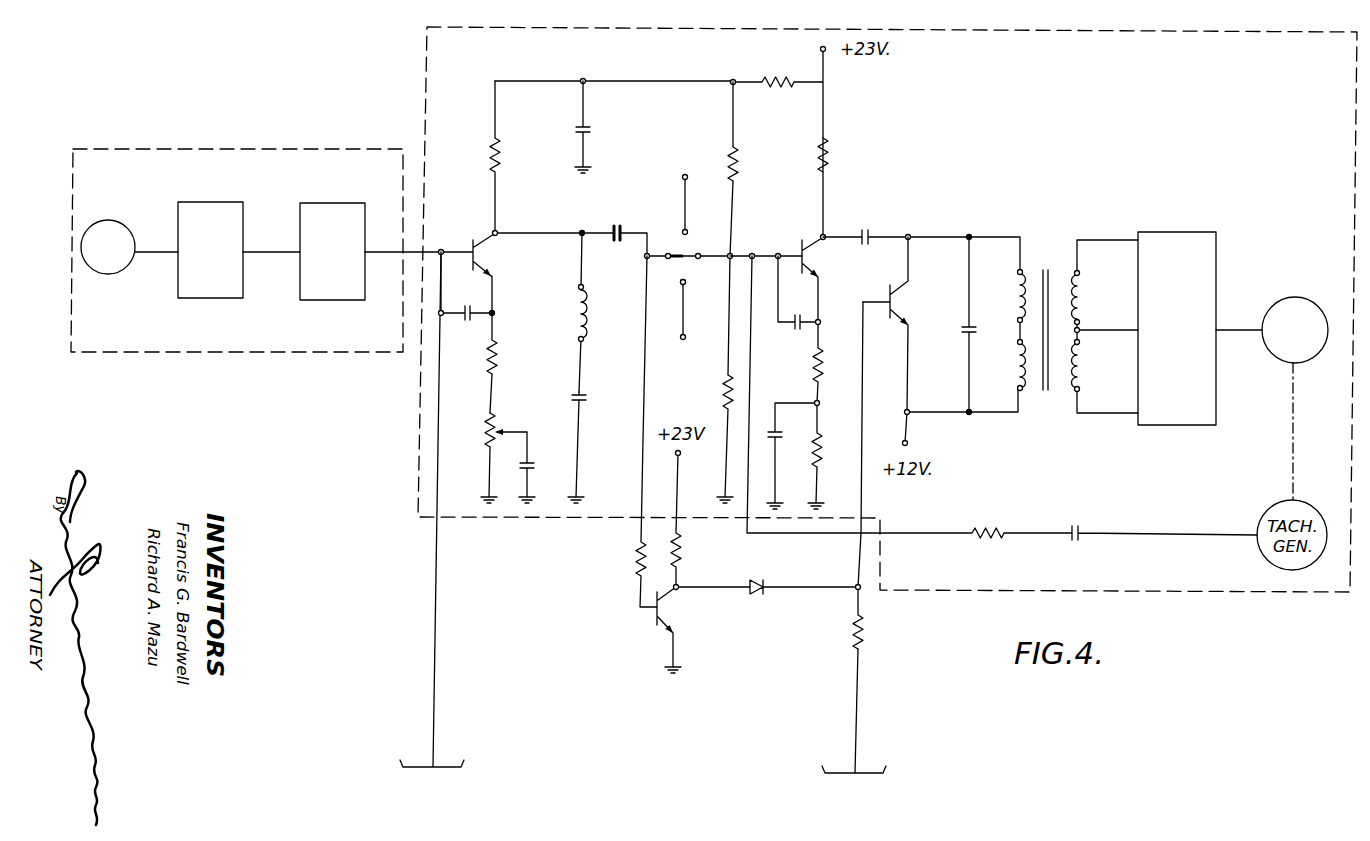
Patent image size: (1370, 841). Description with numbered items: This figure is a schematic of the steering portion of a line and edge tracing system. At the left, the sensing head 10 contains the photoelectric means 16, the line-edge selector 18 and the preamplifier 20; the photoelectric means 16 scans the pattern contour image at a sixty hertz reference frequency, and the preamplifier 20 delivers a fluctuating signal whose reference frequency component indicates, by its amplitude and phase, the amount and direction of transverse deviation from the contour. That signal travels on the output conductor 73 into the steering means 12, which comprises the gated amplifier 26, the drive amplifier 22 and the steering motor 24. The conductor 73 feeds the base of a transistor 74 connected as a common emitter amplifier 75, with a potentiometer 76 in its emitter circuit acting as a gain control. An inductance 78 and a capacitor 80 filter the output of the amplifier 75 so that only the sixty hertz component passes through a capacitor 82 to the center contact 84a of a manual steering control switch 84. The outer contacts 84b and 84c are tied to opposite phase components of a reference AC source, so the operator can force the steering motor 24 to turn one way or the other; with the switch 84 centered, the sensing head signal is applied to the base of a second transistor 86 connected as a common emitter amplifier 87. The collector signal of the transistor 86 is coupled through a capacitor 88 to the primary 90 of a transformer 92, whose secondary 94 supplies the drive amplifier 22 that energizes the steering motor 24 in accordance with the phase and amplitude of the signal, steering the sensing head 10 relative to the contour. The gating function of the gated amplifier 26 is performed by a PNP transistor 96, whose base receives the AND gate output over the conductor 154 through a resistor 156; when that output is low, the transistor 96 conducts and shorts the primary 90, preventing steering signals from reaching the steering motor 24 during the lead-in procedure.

The sensing head 10 is at (236, 150).
The steering means 12 is at (781, 30).
The photoelectric means 16 is at (117, 222).
The line-edge selector 18 is at (195, 202).
The preamplifier 20 is at (320, 203).
The drive amplifier 22 is at (1168, 232).
The steering motor 24 is at (1320, 298).
The gated amplifier 26 is at (850, 195).
The output conductor 73 is at (380, 252).
The transistor 74 is at (470, 245).
The amplifier 75 is at (500, 223).
The potentiometer 76 is at (492, 420).
The inductance 78 is at (583, 299).
The capacitor 80 is at (582, 400).
The capacitor 82 is at (622, 228).
The manual steering control switch 84 is at (689, 259).
The center contact 84a is at (668, 249).
The outer contact 84b is at (688, 232).
The outer contact 84c is at (683, 283).
The second transistor 86 is at (787, 245).
The common emitter amplifier 87 is at (805, 210).
The capacitor 88 is at (866, 240).
The primary 90 is at (1020, 250).
The transformer 92 is at (1050, 208).
The secondary 94 is at (1064, 250).
The PNP transistor 96 is at (889, 289).
The conductor 154 is at (855, 680).
The resistor 156 is at (861, 629).